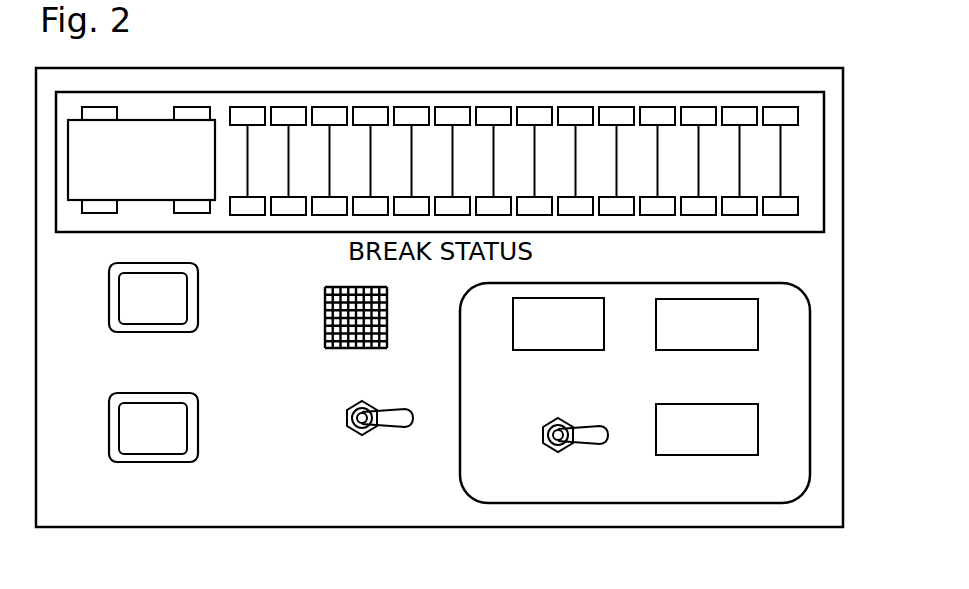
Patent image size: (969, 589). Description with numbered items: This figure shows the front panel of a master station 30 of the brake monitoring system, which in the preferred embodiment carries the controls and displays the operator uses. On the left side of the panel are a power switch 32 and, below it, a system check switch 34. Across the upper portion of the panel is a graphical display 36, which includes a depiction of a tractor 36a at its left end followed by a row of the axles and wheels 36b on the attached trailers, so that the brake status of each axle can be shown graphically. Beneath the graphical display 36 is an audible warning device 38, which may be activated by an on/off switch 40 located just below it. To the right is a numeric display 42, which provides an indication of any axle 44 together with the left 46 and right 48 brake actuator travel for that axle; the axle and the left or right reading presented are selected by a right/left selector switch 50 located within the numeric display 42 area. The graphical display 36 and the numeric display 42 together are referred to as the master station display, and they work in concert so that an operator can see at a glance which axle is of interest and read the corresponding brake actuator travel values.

The master station 30 is at (662, 548).
The power switch 32 is at (155, 263).
The system check switch 34 is at (155, 393).
The graphical display 36 is at (531, 90).
The tractor 36a is at (164, 170).
The axles and wheels 36b is at (408, 150).
The audible warning device 38 is at (348, 287).
The on/off switch 40 is at (351, 405).
The numeric display 42 is at (461, 480).
The axle 44 is at (513, 340).
The left brake actuator travel 46 is at (758, 338).
The right brake actuator travel 48 is at (758, 443).
The right/left selector switch 50 is at (543, 433).